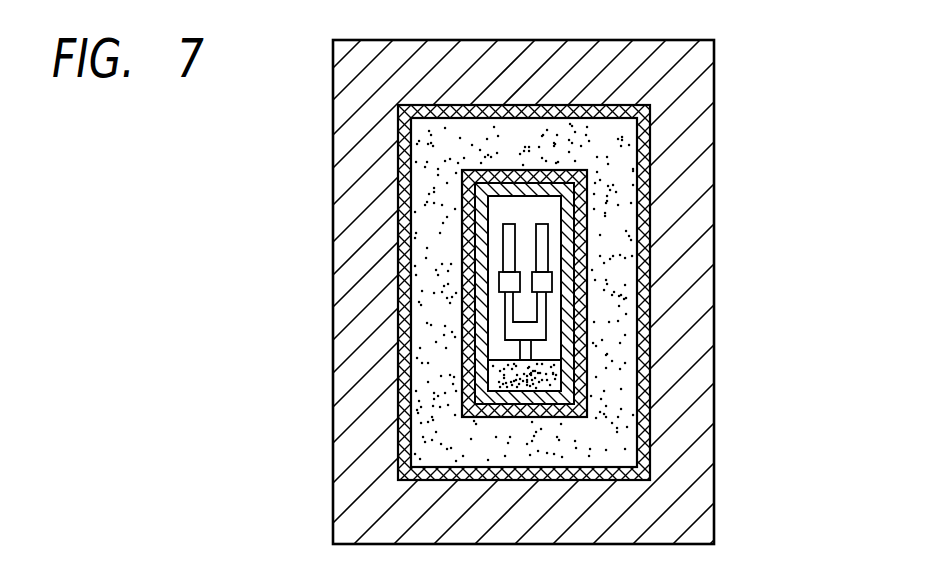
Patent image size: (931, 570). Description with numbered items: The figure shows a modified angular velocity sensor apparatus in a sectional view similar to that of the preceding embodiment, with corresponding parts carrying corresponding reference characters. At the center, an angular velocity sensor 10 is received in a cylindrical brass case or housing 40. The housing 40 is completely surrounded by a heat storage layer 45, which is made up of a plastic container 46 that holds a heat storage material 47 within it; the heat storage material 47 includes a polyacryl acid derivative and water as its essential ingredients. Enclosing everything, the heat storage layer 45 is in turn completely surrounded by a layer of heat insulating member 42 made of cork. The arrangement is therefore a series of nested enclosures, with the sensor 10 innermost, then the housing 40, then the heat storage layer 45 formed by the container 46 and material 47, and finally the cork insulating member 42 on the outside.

The heat insulating member 42 is at (343, 211).
The housing 40 is at (585, 197).
The angular velocity sensor 10 is at (556, 243).
The heat storage material 47 is at (627, 330).
The plastic container 46 is at (650, 428).
The heat storage layer 45 is at (768, 303).